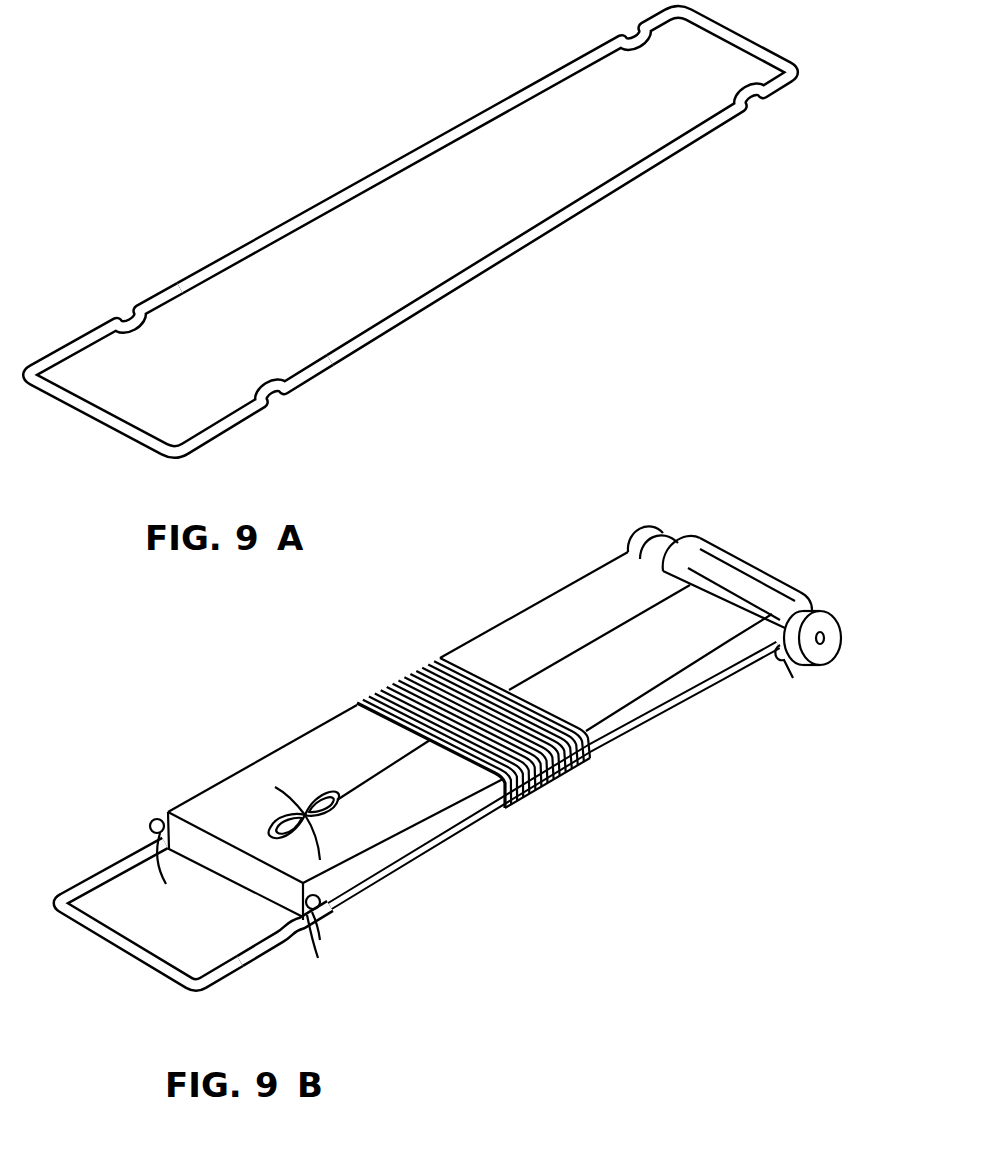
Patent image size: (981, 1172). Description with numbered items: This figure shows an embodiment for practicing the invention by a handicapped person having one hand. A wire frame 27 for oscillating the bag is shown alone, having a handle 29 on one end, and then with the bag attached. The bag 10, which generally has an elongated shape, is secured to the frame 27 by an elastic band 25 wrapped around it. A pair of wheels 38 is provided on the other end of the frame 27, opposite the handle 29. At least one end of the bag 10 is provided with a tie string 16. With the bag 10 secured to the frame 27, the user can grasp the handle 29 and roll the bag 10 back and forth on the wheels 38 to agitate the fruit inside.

In FIG. 9B, the bag 10 is at (258, 778).
In FIG. 9B, the tie string 16 is at (305, 817).
In FIG. 9B, the elastic band 25 is at (400, 680).
In FIG. 9A, the frame 27 is at (580, 217).
In FIG. 9B, the frame 27 is at (247, 967).
In FIG. 9A, the handle 29 is at (138, 438).
In FIG. 9B, the handle 29 is at (158, 970).
In FIG. 9B, the wheels 38 is at (802, 618).